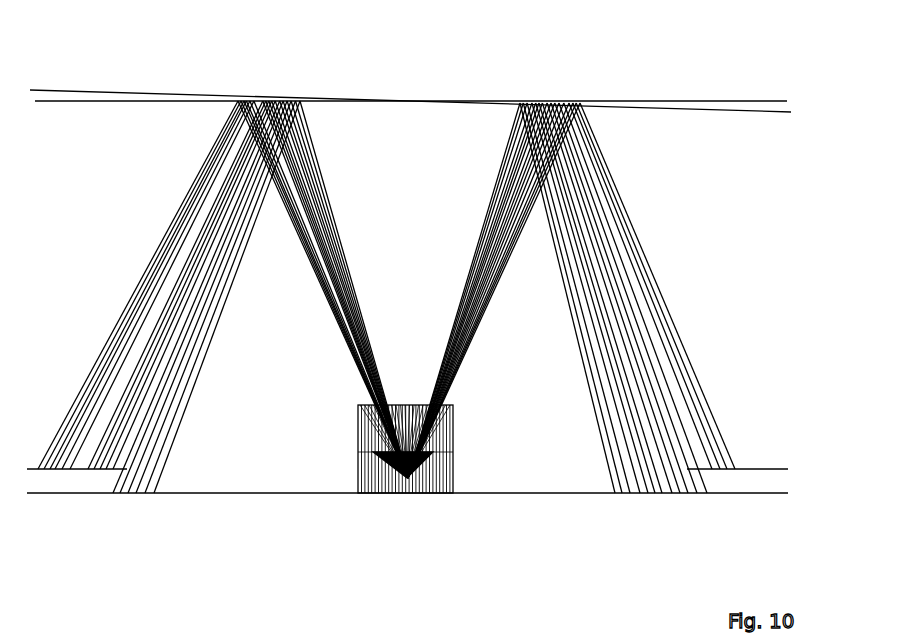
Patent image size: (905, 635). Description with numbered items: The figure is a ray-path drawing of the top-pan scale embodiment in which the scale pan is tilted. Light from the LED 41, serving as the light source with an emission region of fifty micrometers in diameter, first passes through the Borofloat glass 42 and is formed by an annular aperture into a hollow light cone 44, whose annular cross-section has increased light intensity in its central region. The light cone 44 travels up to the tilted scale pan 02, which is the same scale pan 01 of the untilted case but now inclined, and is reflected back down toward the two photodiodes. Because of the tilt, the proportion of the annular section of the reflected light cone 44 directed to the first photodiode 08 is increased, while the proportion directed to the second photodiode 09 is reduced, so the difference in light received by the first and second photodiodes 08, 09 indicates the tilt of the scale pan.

The scale pan 01 is at (714, 100).
The tilted scale pan 02 is at (52, 92).
The first photodiode 08 is at (73, 469).
The second photodiode 09 is at (757, 469).
The LED 41 is at (407, 478).
The Borofloat glass 42 is at (455, 450).
The light cone 44 is at (357, 353).